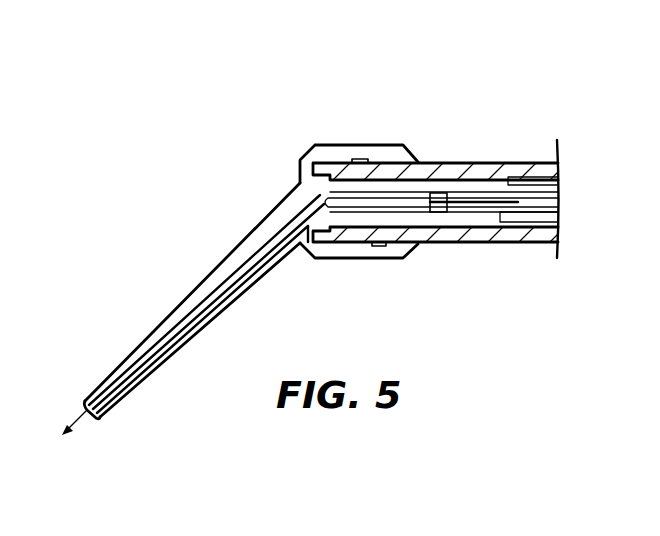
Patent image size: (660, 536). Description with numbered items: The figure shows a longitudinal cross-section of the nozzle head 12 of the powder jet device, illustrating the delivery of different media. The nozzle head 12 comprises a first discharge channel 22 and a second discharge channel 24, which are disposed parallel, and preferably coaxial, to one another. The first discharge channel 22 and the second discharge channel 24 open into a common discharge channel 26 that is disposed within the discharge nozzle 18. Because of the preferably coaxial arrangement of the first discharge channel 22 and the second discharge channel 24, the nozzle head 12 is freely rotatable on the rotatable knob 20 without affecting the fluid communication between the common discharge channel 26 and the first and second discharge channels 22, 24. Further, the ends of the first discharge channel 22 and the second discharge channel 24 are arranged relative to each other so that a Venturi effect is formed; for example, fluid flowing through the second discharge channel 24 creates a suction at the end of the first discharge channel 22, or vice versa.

The nozzle head 12 is at (301, 100).
The discharge nozzle 18 is at (227, 259).
The rotatable knob 20 is at (508, 163).
The first discharge channel 22 is at (473, 203).
The second discharge channel 24 is at (453, 163).
The common discharge channel 26 is at (223, 289).